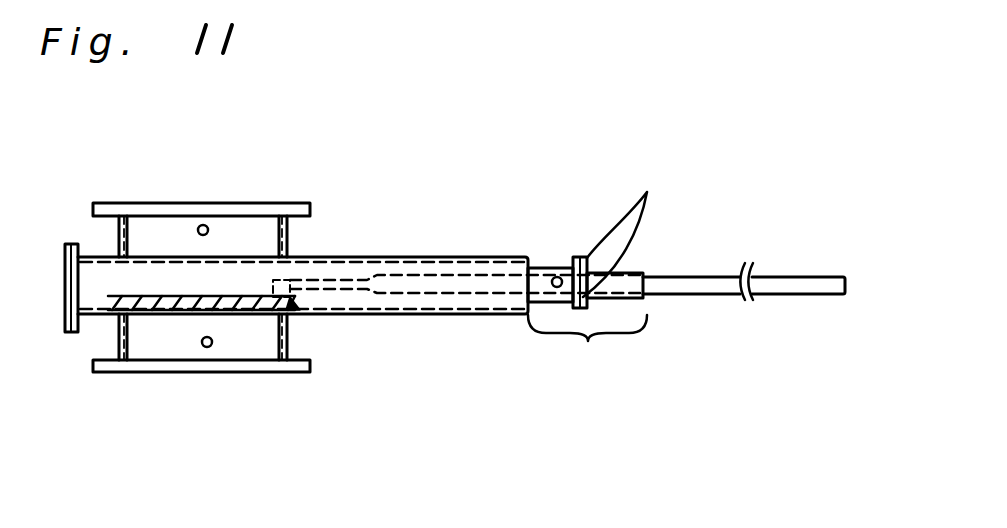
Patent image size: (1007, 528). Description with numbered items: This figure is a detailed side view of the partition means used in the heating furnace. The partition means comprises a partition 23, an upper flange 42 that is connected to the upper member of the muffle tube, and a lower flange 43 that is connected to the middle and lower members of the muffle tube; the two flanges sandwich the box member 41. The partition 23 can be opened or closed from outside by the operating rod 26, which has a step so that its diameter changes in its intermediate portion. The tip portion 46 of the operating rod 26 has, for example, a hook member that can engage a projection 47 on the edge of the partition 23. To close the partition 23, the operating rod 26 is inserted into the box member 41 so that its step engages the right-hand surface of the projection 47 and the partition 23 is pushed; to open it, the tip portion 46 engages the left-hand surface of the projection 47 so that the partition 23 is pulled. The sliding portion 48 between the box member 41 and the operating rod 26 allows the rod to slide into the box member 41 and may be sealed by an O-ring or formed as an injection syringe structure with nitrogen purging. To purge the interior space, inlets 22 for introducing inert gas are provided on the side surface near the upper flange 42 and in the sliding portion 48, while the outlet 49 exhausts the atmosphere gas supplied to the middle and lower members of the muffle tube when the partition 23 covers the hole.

The inlet 22 is at (206, 225).
The partition 23 is at (110, 315).
The operating rod 26 is at (803, 275).
The box member 41 is at (393, 255).
The upper flange 42 is at (100, 213).
The lower flange 43 is at (110, 370).
The tip portion 46 is at (285, 290).
The projection 47 is at (290, 298).
The sliding portion 48 is at (588, 340).
The outlet 49 is at (208, 347).